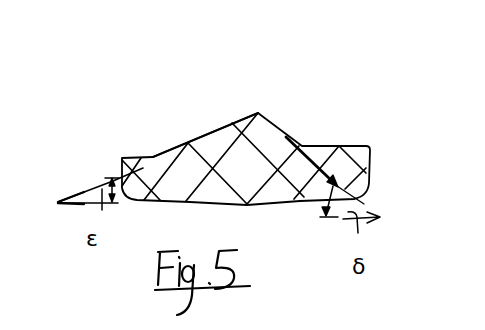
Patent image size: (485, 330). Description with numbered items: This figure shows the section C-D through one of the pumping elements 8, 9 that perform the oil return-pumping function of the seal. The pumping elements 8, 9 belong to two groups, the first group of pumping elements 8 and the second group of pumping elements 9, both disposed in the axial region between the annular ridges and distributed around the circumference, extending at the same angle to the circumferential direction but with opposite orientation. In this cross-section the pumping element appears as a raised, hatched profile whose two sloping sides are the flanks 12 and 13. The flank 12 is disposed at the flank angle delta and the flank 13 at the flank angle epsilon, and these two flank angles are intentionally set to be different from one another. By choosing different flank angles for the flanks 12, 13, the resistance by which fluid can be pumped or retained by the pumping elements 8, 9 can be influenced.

The pumping elements 8 is at (258, 155).
The pumping elements 9 is at (258, 155).
The flank 12 is at (286, 125).
The flank 13 is at (222, 126).